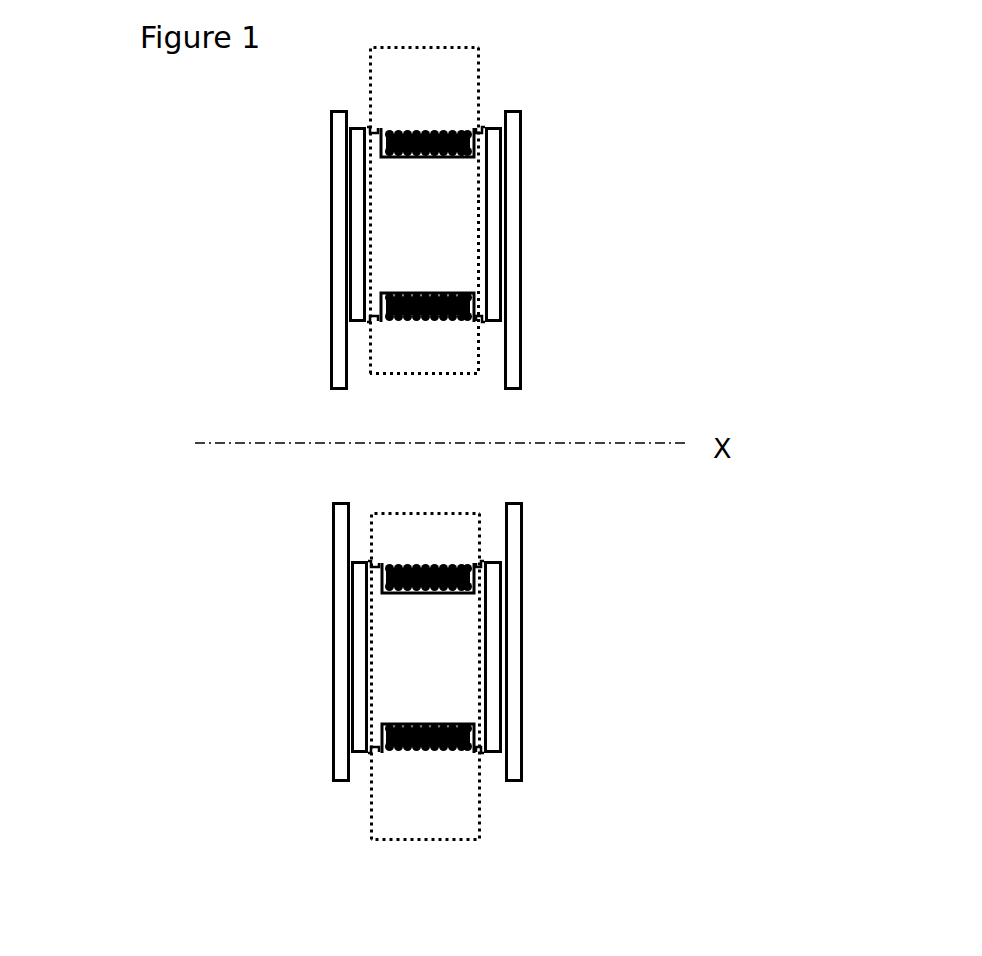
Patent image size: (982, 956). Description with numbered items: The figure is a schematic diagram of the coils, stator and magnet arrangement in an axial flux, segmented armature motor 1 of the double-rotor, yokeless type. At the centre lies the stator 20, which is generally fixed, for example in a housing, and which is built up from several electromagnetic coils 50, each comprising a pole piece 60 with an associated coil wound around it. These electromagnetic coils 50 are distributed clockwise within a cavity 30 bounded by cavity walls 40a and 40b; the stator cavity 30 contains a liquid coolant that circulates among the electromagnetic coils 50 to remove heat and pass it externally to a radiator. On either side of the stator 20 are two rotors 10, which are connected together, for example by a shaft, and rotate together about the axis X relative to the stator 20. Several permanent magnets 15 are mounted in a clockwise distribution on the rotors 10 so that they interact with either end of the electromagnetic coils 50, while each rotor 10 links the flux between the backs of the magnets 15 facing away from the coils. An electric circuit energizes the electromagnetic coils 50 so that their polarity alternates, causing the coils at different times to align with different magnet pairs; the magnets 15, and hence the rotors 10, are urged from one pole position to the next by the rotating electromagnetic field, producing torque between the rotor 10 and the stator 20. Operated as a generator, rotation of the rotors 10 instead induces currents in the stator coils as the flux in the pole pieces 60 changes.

The axial flux, segmented armature motor 1 is at (462, 231).
The rotor 10 is at (332, 629).
The permanent magnet 15 is at (495, 305).
The stator 20 is at (483, 825).
The cavity 30 is at (423, 533).
The cavity wall 40a is at (362, 85).
The cavity wall 40b is at (497, 75).
The electromagnetic coil 50 is at (440, 355).
The pole piece 60 is at (438, 208).